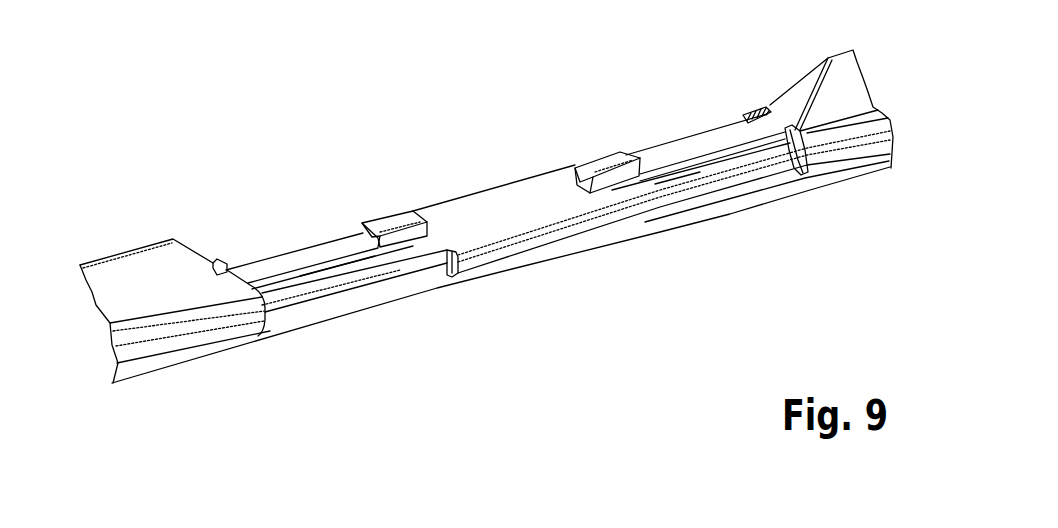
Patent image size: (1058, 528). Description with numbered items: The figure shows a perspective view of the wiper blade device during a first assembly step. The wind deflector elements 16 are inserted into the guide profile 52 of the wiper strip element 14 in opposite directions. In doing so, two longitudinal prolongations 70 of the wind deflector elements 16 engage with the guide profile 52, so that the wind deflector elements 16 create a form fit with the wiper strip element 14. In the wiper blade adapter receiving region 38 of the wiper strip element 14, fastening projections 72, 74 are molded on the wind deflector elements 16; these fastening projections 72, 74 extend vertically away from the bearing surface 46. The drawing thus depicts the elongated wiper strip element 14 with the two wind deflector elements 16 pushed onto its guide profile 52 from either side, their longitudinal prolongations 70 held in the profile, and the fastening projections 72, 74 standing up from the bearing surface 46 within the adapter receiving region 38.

The wiper strip element 14 is at (324, 318).
The wind deflector elements 16 is at (284, 256).
The wiper blade adapter receiving region 38 is at (392, 77).
The bearing surface 46 is at (484, 195).
The guide profile 52 is at (747, 113).
The longitudinal prolongations 70 is at (347, 267).
The fastening projection 72 is at (397, 222).
The fastening projection 74 is at (598, 170).